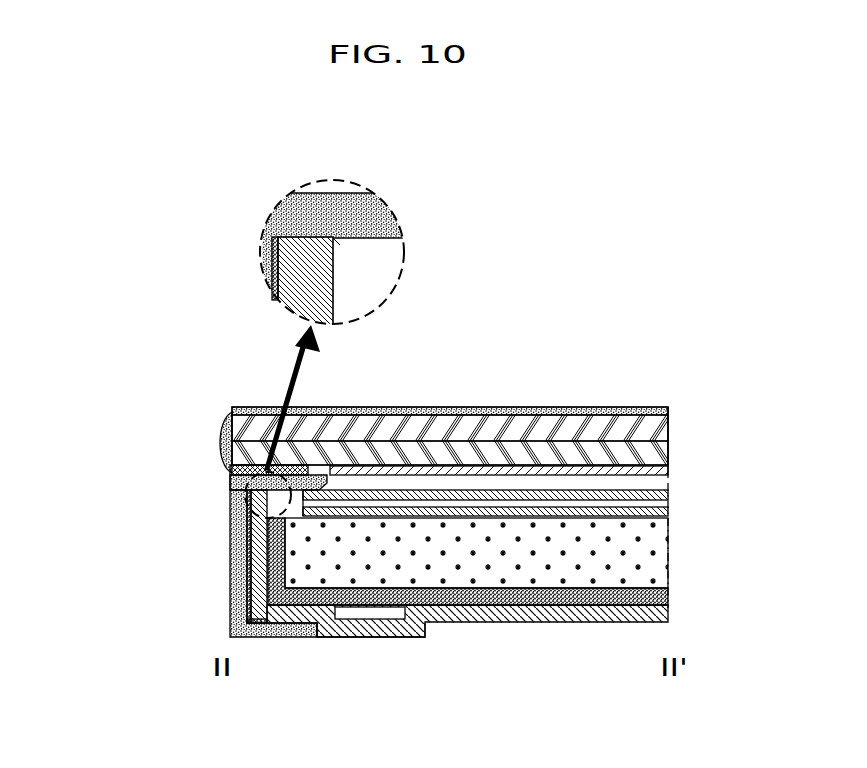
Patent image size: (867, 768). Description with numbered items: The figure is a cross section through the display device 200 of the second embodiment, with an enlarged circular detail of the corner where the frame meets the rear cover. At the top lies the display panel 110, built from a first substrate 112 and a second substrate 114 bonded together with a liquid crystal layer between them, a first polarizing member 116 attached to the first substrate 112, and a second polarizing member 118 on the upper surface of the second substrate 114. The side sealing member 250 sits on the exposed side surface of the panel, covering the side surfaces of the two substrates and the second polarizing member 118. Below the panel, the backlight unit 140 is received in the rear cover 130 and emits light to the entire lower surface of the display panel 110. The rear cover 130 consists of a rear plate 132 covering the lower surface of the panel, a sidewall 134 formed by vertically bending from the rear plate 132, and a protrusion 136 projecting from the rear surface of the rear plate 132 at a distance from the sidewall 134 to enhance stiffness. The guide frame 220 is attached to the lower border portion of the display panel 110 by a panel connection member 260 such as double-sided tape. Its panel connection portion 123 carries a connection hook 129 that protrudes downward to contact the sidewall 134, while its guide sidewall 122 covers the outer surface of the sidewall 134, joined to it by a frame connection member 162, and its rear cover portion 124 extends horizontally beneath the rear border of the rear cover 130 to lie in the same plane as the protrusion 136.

The display device 200 is at (708, 248).
The display panel 110 is at (650, 347).
The second polarizing member 118 is at (524, 410).
The second substrate 114 is at (568, 440).
The first substrate 112 is at (612, 455).
The first polarizing member 116 is at (657, 473).
The side sealing member 250 is at (228, 438).
The panel connection member 260 is at (298, 467).
The guide frame 220 is at (123, 488).
The panel connection portion 123 is at (247, 492).
The guide sidewall 122 is at (240, 553).
The rear cover portion 124 is at (252, 610).
The frame connection member 162 is at (245, 615).
The connection hook 129 is at (336, 246).
The rear cover 130 is at (462, 702).
The sidewall 134 is at (259, 568).
The protrusion 136 is at (372, 637).
The rear plate 132 is at (462, 622).
The backlight unit 140 is at (672, 485).